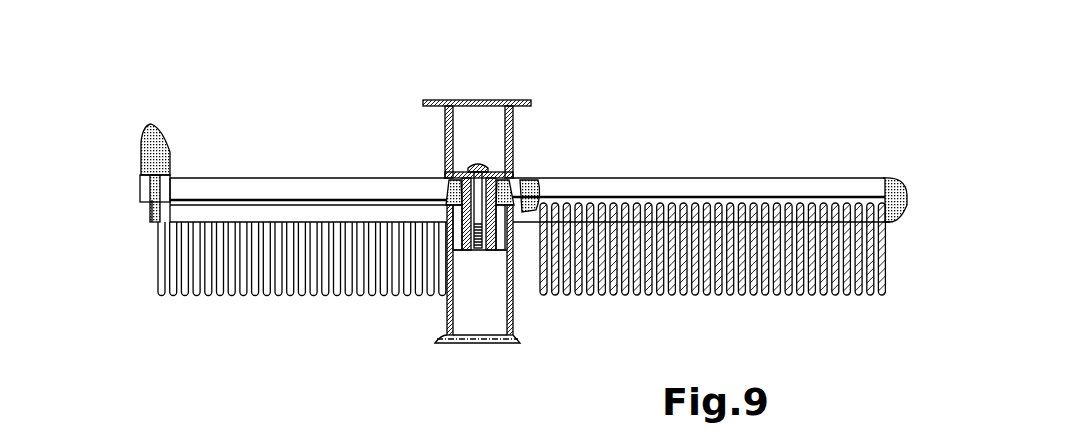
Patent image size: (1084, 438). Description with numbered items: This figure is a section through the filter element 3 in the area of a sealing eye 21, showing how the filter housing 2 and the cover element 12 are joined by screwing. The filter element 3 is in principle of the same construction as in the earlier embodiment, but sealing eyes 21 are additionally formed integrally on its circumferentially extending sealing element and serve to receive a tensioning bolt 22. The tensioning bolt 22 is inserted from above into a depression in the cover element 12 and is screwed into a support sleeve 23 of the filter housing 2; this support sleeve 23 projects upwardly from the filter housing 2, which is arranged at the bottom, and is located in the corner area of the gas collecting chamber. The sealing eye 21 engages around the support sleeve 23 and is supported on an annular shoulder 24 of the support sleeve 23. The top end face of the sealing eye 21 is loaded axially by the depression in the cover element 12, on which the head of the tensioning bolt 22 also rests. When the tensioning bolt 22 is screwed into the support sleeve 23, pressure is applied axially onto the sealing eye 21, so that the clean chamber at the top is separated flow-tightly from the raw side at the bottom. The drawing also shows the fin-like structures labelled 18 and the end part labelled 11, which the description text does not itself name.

The filter housing 2 is at (512, 316).
The filter element 3 is at (812, 180).
The end cap 11 is at (157, 142).
The cover element 12 is at (513, 132).
The cooling fins 18 is at (163, 273).
The sealing eye 21 is at (446, 190).
The tensioning bolt 22 is at (477, 165).
The support sleeve 23 is at (471, 250).
The annular shoulder 24 is at (452, 212).